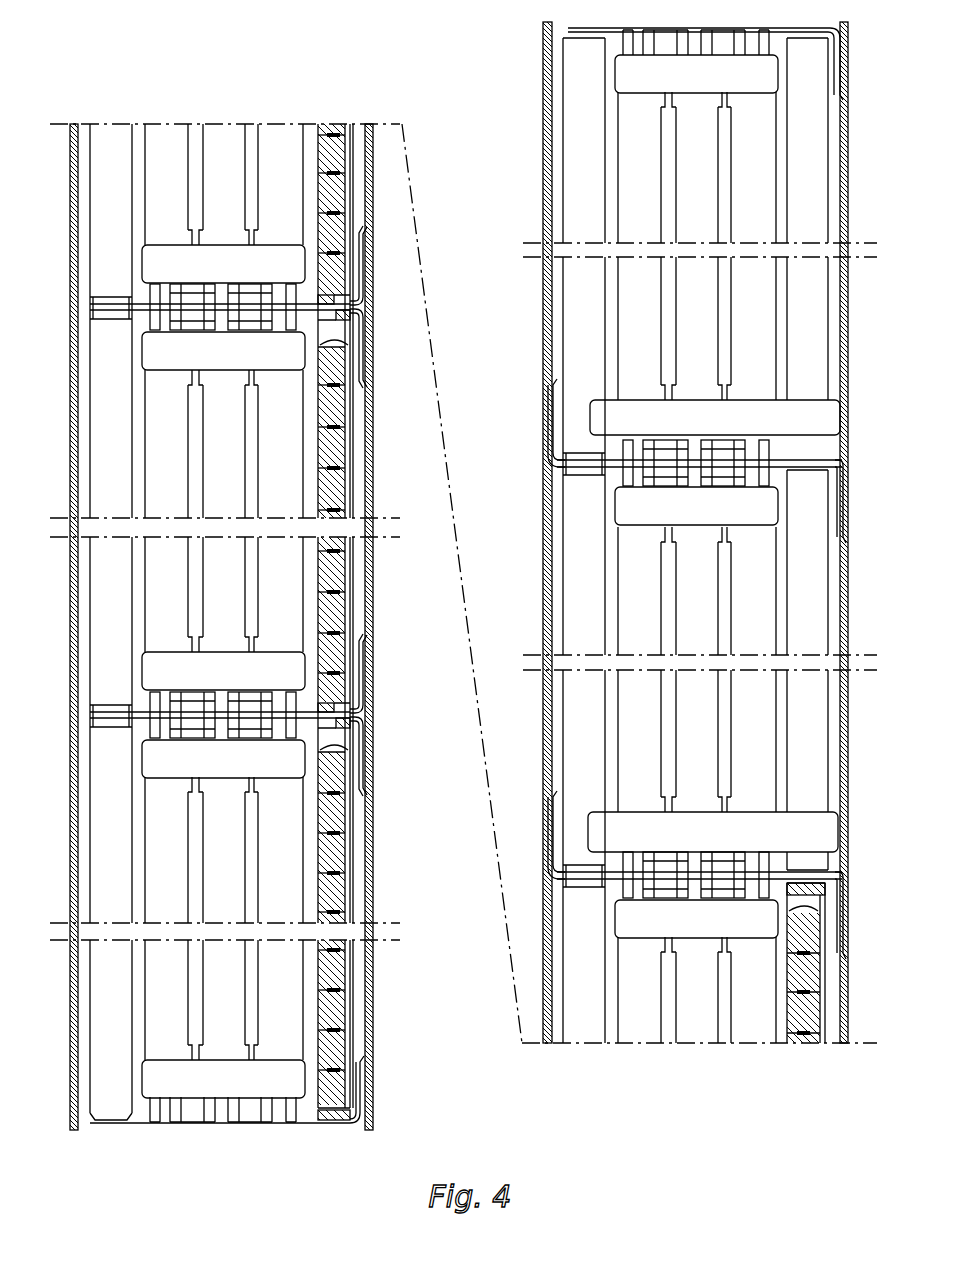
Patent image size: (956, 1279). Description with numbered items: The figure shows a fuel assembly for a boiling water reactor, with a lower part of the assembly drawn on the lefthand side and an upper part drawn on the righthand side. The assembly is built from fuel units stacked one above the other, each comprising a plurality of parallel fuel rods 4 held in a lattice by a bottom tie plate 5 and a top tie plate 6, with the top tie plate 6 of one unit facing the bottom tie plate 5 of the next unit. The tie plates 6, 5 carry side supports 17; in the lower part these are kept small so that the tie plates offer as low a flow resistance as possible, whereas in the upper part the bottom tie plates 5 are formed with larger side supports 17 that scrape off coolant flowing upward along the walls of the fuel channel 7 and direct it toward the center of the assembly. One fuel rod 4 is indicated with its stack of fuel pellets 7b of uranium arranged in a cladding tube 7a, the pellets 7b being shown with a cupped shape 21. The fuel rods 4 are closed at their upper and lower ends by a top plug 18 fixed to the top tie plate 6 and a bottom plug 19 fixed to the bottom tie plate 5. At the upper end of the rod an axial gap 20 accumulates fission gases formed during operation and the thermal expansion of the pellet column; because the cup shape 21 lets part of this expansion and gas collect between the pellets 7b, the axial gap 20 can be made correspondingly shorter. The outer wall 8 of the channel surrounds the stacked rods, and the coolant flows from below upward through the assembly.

The fuel rod 4 is at (226, 460).
The bottom tie plate 5 is at (362, 672).
The top tie plate 6 is at (362, 752).
The channel wall 7 is at (546, 534).
The cladding tube 7a is at (352, 860).
The fuel pellet 7b is at (333, 890).
The outer wall 8 is at (370, 1005).
The side support 17 is at (285, 668).
The top plug 18 is at (350, 318).
The bottom plug 19 is at (357, 300).
The axial gap 20 is at (336, 336).
The cupped shape 21 is at (350, 478).